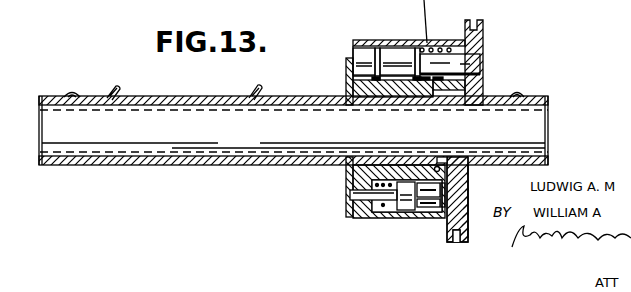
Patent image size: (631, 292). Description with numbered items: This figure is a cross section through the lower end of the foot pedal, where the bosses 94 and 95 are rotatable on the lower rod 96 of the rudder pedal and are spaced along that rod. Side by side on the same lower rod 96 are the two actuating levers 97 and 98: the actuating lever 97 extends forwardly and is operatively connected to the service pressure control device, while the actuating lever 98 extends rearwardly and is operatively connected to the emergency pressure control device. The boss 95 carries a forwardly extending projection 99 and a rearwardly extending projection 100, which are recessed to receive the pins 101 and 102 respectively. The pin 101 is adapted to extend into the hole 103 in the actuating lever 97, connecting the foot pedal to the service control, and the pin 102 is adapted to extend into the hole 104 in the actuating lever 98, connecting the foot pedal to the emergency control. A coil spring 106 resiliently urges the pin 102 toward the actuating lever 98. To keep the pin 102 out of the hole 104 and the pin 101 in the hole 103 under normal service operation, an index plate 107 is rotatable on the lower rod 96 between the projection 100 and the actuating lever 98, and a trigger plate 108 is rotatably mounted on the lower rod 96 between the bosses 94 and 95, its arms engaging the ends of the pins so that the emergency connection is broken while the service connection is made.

The boss 94 is at (201, 96).
The boss 95 is at (347, 96).
The lower rod 96 is at (233, 130).
The actuating lever 97 is at (489, 40).
The actuating lever 98 is at (468, 176).
The forwardly extending projection 99 is at (404, 40).
The rearwardly extending projection 100 is at (366, 214).
The pin 101 is at (455, 60).
The pin 102 is at (425, 213).
The hole 103 is at (483, 71).
The hole 104 is at (468, 196).
The coil spring 106 is at (388, 214).
The index plate 107 is at (440, 218).
The trigger plate 108 is at (347, 62).